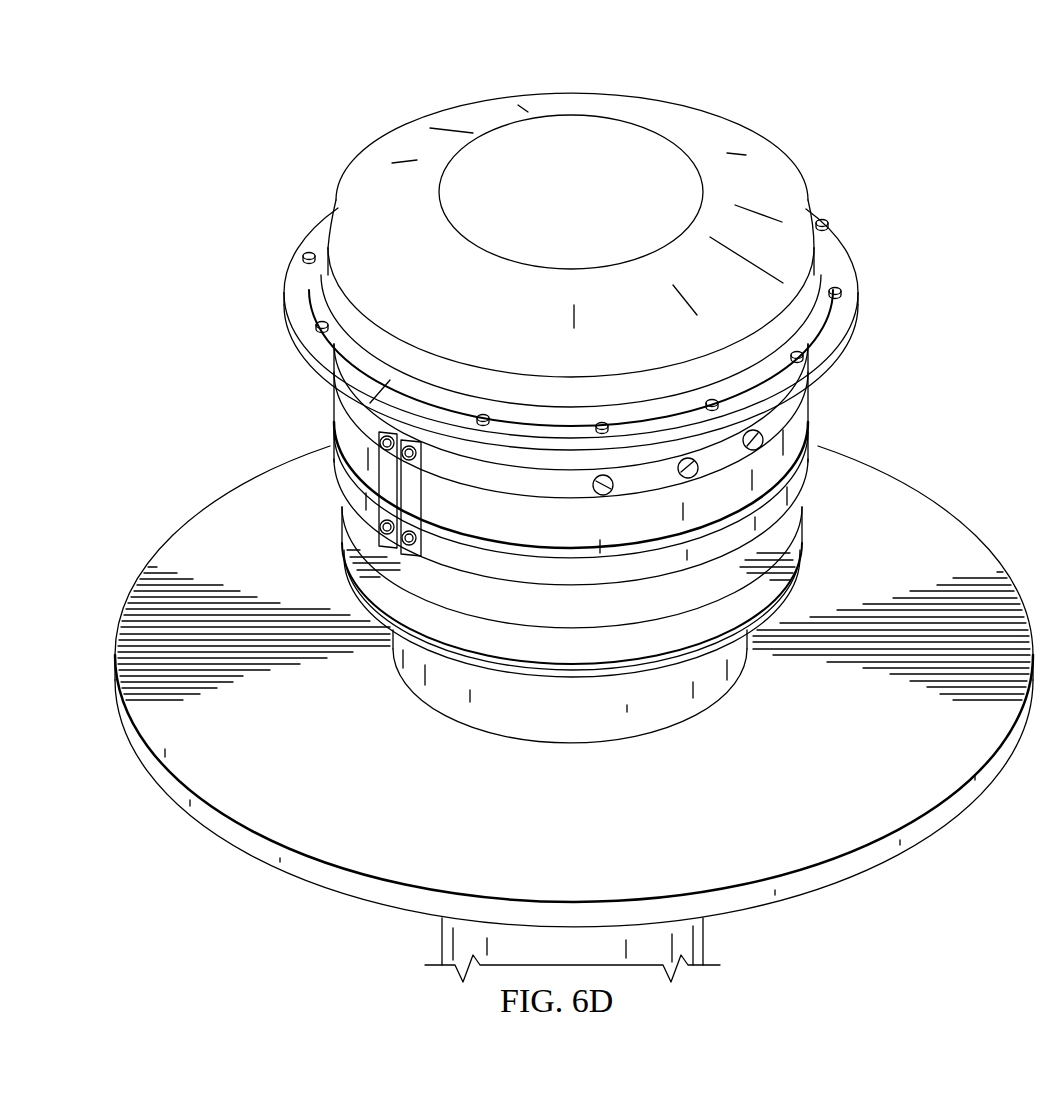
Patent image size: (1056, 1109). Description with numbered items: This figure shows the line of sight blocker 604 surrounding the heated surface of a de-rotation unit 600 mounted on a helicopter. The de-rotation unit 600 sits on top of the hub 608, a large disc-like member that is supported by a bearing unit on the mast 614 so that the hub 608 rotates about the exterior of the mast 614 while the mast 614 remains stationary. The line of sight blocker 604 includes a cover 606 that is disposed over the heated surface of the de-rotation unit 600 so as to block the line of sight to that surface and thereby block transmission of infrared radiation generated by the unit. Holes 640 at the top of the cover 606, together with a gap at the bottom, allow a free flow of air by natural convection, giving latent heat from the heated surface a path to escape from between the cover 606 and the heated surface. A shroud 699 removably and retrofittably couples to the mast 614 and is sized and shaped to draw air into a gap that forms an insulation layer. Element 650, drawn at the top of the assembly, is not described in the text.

The de-rotation unit 600 is at (926, 204).
The dome cap 650 is at (776, 158).
The cover 606 is at (812, 442).
The shroud 699 is at (812, 477).
The holes 640 is at (598, 488).
The line of sight blocker 604 is at (334, 440).
The hub 608 is at (246, 850).
The mast 614 is at (706, 940).